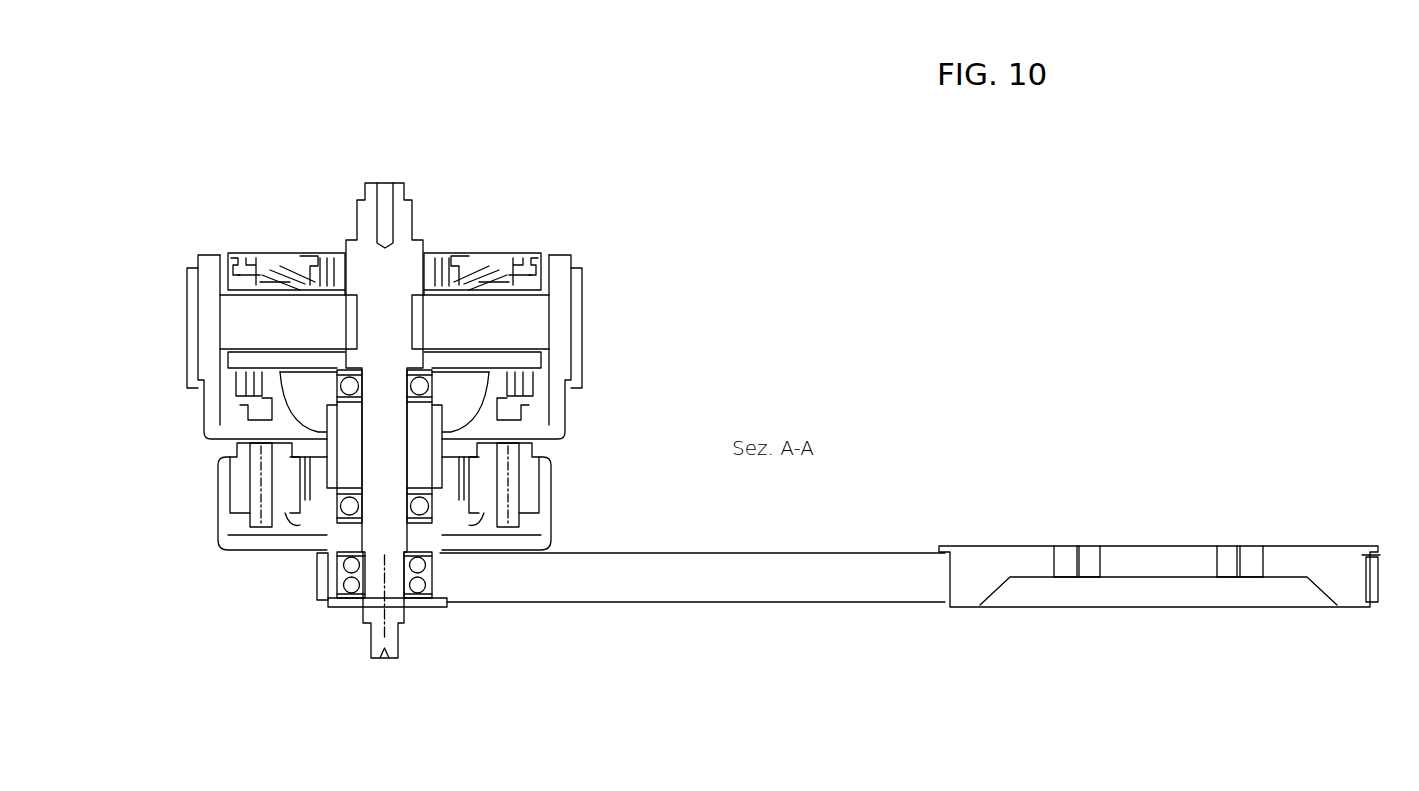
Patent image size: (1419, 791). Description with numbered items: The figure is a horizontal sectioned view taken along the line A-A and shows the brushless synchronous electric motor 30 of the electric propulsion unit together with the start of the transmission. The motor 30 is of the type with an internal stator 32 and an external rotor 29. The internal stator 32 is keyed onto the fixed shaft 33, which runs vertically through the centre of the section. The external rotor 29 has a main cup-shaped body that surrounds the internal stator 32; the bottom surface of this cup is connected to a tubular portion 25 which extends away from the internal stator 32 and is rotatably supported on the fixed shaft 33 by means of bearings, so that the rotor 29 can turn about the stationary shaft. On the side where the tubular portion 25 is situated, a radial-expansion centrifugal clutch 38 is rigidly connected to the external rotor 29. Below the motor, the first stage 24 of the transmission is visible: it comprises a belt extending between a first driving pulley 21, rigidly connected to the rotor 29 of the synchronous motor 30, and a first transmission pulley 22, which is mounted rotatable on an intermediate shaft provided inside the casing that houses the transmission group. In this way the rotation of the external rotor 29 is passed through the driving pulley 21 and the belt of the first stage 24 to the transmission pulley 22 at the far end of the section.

The first driving pulley 21 is at (327, 605).
The first transmission pulley 22 is at (1353, 575).
The first stage 24 is at (932, 523).
The tubular portion 25 is at (297, 480).
The external rotor 29 is at (210, 325).
The brushless synchronous electric motor 30 is at (448, 387).
The internal stator 32 is at (473, 262).
The fixed shaft 33 is at (388, 285).
The radial-expansion centrifugal clutch 38 is at (413, 476).